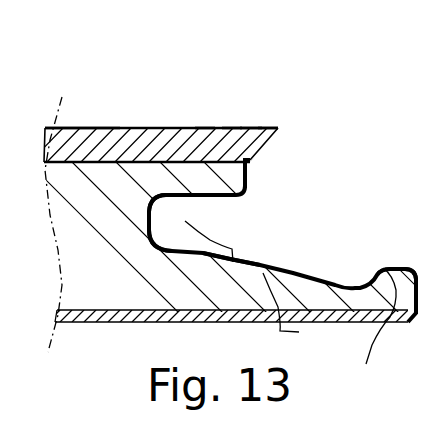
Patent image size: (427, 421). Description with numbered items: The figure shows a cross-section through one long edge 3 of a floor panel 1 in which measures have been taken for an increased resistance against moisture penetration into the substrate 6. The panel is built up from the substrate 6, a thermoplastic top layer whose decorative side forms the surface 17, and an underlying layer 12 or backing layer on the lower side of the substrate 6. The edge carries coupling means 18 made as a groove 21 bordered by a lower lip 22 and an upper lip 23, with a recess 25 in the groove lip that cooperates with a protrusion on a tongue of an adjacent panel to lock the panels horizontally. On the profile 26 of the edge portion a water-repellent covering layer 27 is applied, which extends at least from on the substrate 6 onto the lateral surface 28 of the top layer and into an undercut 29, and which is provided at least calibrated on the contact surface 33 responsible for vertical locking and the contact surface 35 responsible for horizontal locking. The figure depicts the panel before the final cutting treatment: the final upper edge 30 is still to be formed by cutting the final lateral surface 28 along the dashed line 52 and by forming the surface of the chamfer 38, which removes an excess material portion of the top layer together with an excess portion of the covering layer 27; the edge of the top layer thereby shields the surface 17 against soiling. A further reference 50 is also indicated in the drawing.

The floor panel 1 is at (140, 108).
The long side or edge 3 is at (288, 219).
The substrate 6 is at (112, 257).
The underlying layer 12 is at (233, 262).
The surface 17 is at (62, 128).
The coupling means 18 is at (212, 221).
The groove 21 is at (263, 240).
The lower lip 22 is at (292, 309).
The upper lip 23 is at (193, 182).
The recess 25 is at (353, 275).
The profile 26 is at (150, 240).
The covering layer 27 is at (313, 278).
The lateral surface 28 is at (202, 128).
The undercut 29 is at (249, 153).
The upper edge 30 is at (250, 129).
The contact surface 33 is at (202, 197).
The contact surface 35 is at (375, 328).
The chamfer 38 is at (230, 129).
The cover plate edge 50 is at (265, 129).
The dashed line 52 is at (260, 145).